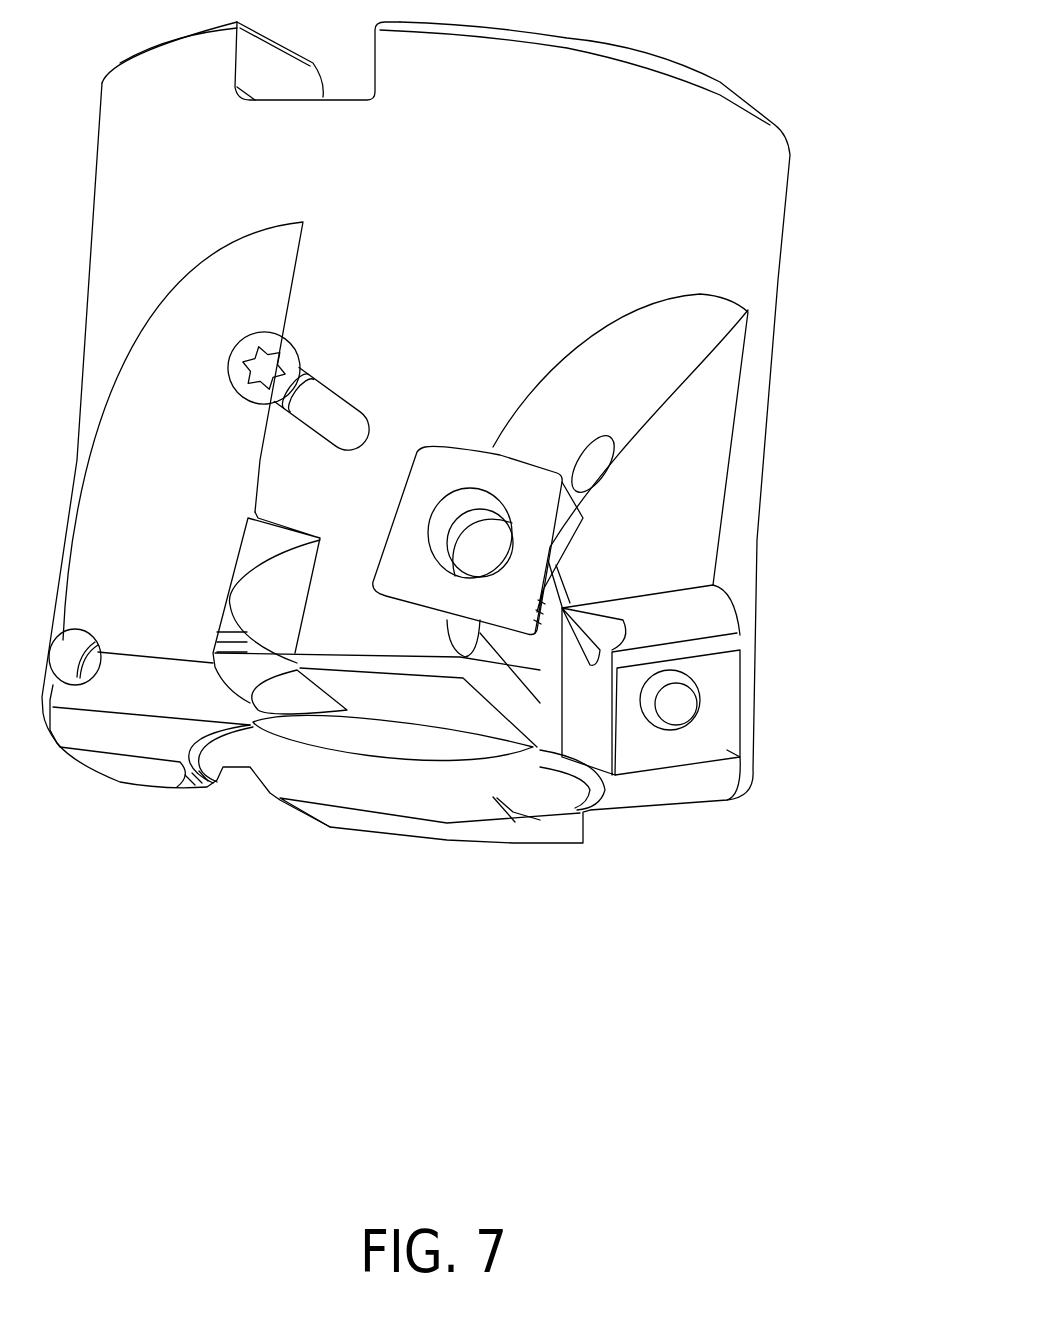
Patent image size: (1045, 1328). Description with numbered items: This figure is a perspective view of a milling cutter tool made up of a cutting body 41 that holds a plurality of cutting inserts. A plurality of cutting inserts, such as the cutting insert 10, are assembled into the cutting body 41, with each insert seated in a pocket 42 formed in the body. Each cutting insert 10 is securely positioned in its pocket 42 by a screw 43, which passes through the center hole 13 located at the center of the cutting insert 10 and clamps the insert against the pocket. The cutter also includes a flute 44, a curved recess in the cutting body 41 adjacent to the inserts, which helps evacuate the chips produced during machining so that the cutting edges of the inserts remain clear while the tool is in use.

The cutting insert 10 is at (478, 474).
The center hole 13 is at (467, 500).
The cutting body 41 is at (487, 460).
The pocket 42 is at (643, 752).
The screw 43 is at (327, 373).
The flute 44 is at (668, 335).